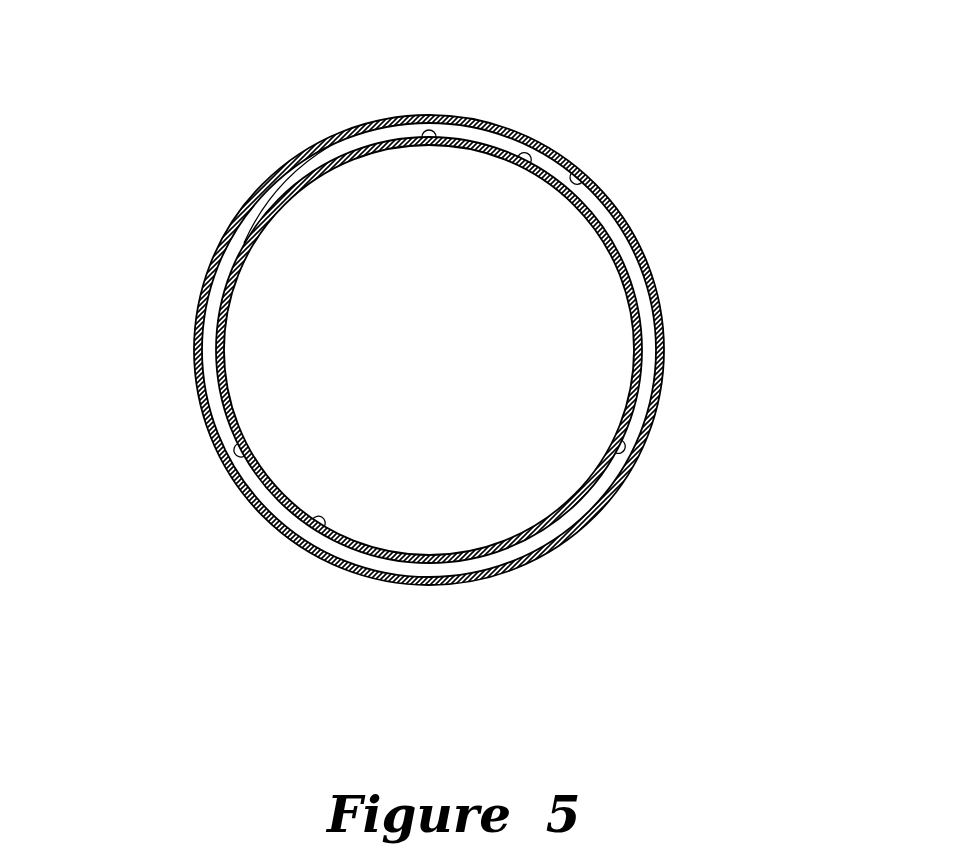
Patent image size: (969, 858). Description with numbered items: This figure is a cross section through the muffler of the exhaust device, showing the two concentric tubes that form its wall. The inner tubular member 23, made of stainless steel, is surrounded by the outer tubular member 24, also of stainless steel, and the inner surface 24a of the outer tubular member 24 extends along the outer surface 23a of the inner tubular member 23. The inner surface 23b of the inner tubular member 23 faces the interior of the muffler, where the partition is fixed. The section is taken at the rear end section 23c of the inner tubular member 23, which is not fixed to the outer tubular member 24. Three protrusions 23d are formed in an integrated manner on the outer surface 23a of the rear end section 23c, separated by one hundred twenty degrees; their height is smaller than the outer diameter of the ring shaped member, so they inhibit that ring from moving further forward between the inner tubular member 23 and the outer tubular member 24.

The inner tubular member 23 is at (584, 519).
The outer surface 23a is at (522, 164).
The inner surface 23b is at (333, 528).
The rear end section 23c is at (245, 243).
The protrusions 23d is at (430, 134).
The outer tubular member 24 is at (657, 278).
The inner surface 24a is at (591, 173).